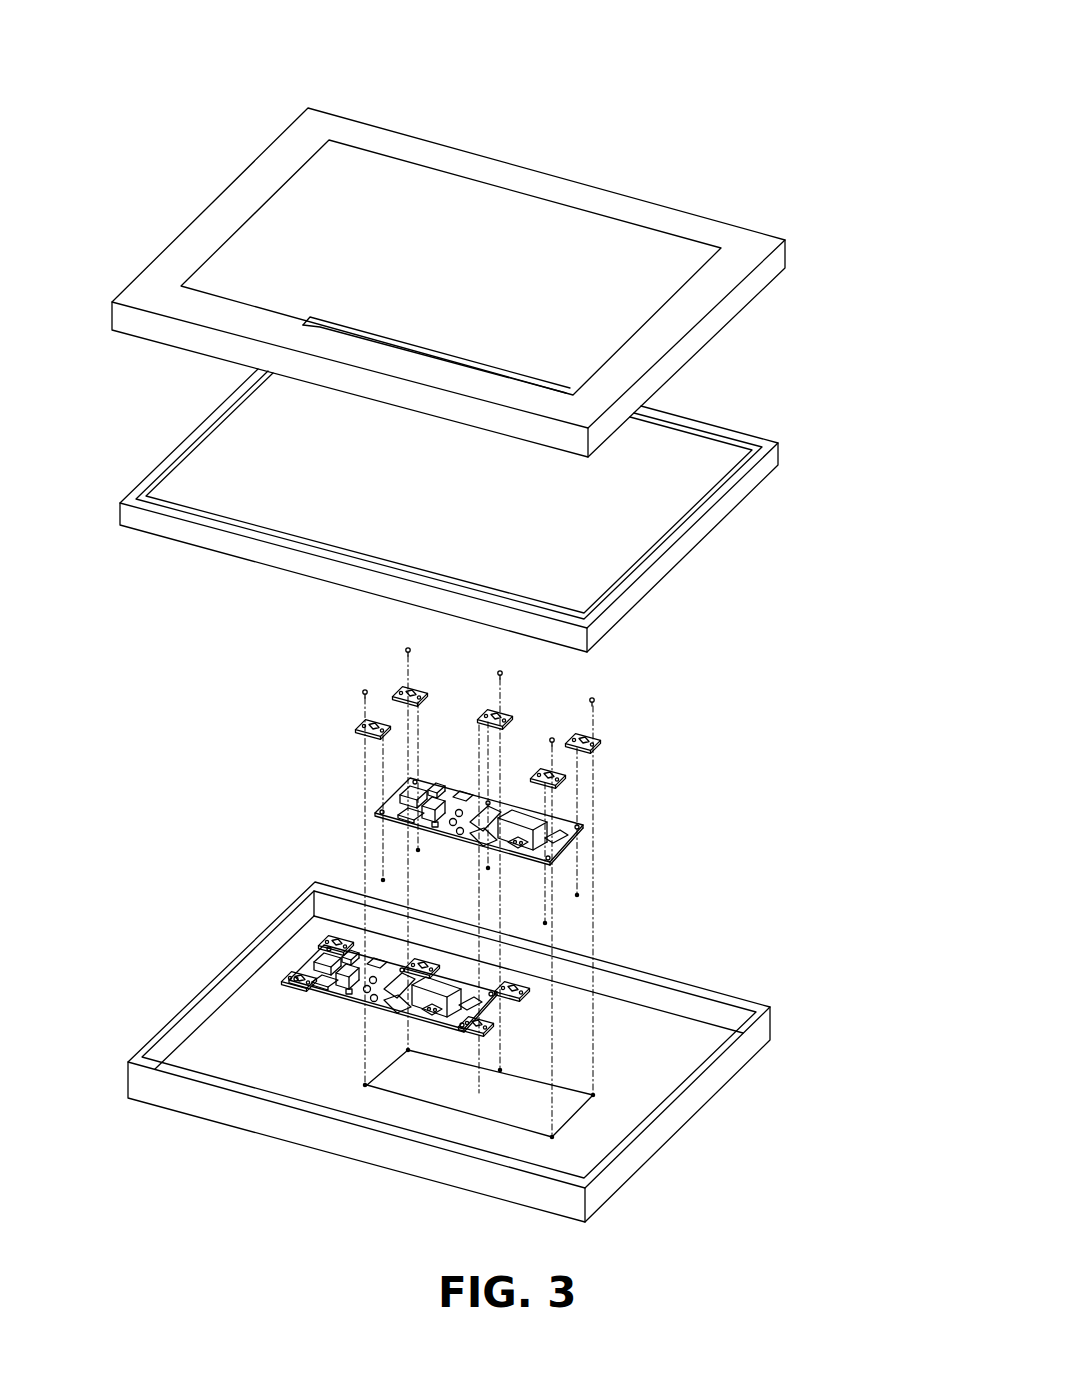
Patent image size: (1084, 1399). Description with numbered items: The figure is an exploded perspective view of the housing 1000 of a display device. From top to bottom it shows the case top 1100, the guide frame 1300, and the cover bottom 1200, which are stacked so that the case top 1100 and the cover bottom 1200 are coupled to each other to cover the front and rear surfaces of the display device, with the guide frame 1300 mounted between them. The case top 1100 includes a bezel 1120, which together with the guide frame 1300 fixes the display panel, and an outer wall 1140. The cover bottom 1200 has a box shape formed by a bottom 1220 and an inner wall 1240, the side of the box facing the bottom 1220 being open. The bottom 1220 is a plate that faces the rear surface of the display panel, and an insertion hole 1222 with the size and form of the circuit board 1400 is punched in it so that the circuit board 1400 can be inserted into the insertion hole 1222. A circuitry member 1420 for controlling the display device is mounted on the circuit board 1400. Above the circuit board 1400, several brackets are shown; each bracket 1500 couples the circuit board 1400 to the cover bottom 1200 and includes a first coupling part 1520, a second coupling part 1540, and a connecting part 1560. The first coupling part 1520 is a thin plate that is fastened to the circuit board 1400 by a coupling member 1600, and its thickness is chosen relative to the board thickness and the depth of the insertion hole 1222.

The housing 1000 is at (542, 27).
The case top 1100 is at (773, 195).
The bezel 1120 is at (712, 288).
The outer wall 1140 is at (684, 347).
The guide frame 1300 is at (683, 592).
The cover bottom 1200 is at (650, 1190).
The bottom 1220 is at (655, 1057).
The insertion hole 1222 is at (437, 1093).
The inner wall 1240 is at (668, 1122).
The circuit board 1400 is at (575, 840).
The circuitry member 1420 is at (396, 783).
The bracket 1500 is at (600, 755).
The first coupling part 1520 is at (405, 686).
The second coupling part 1540 is at (590, 737).
The connecting part 1560 is at (580, 738).
The coupling member 1600 is at (355, 690).